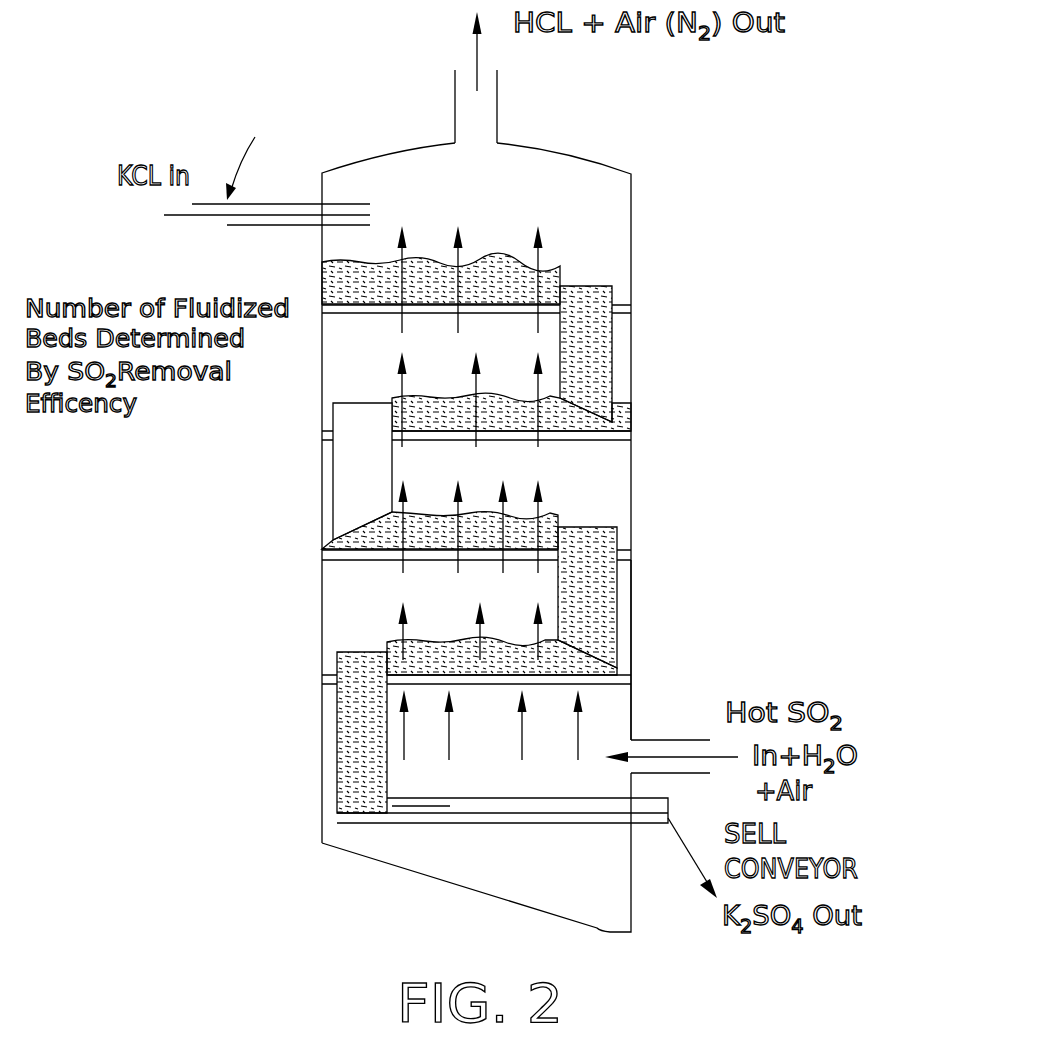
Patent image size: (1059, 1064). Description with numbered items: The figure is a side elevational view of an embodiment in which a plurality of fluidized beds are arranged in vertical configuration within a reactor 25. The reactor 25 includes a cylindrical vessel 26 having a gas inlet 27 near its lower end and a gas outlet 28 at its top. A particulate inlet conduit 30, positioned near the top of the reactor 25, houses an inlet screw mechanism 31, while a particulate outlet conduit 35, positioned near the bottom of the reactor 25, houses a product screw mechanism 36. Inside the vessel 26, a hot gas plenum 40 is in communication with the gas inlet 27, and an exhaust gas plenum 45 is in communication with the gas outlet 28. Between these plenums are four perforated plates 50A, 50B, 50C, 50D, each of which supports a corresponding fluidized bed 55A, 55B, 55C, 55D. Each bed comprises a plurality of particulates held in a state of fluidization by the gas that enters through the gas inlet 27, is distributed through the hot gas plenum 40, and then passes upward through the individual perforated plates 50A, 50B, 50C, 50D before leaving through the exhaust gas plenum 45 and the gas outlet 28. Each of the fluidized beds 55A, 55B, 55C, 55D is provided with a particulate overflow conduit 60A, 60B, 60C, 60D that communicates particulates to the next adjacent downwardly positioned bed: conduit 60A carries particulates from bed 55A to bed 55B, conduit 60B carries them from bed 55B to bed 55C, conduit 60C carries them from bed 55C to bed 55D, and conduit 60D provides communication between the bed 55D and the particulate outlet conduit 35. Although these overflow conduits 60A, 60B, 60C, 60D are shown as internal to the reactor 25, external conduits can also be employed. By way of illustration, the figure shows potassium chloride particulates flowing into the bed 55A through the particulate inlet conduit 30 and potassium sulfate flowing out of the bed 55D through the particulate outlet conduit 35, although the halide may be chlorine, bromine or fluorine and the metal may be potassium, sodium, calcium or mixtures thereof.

The reactor 25 is at (632, 463).
The cylindrical vessel 26 is at (632, 602).
The gas inlet 27 is at (657, 740).
The gas outlet 28 is at (497, 95).
The particulate inlet conduit 30 is at (253, 154).
The inlet screw mechanism 31 is at (258, 217).
The particulate outlet conduit 35 is at (482, 823).
The product screw mechanism 36 is at (455, 807).
The hot gas plenum 40 is at (505, 735).
The exhaust gas plenum 45 is at (485, 182).
The perforated plate 50A is at (631, 307).
The perforated plate 50B is at (632, 433).
The perforated plate 50C is at (632, 555).
The perforated plate 50D is at (632, 677).
The fluidized bed 55A is at (477, 262).
The fluidized bed 55B is at (423, 397).
The fluidized bed 55C is at (420, 517).
The fluidized bed 55D is at (418, 640).
The particulate overflow conduit 60A is at (560, 286).
The particulate overflow conduit 60B is at (337, 412).
The particulate overflow conduit 60C is at (560, 527).
The particulate overflow conduit 60D is at (338, 657).